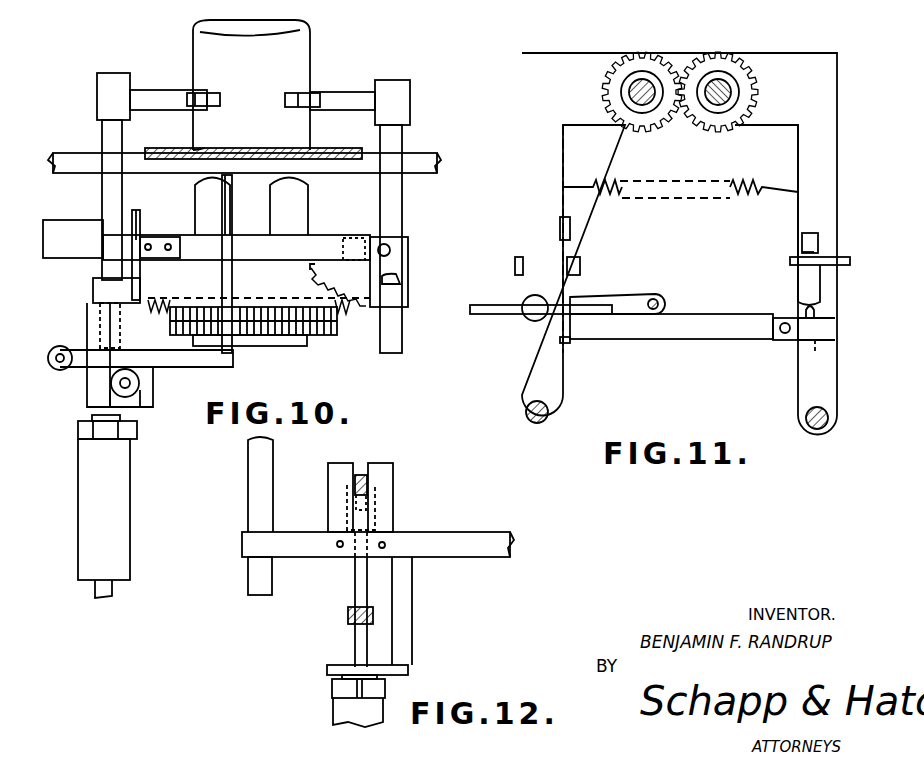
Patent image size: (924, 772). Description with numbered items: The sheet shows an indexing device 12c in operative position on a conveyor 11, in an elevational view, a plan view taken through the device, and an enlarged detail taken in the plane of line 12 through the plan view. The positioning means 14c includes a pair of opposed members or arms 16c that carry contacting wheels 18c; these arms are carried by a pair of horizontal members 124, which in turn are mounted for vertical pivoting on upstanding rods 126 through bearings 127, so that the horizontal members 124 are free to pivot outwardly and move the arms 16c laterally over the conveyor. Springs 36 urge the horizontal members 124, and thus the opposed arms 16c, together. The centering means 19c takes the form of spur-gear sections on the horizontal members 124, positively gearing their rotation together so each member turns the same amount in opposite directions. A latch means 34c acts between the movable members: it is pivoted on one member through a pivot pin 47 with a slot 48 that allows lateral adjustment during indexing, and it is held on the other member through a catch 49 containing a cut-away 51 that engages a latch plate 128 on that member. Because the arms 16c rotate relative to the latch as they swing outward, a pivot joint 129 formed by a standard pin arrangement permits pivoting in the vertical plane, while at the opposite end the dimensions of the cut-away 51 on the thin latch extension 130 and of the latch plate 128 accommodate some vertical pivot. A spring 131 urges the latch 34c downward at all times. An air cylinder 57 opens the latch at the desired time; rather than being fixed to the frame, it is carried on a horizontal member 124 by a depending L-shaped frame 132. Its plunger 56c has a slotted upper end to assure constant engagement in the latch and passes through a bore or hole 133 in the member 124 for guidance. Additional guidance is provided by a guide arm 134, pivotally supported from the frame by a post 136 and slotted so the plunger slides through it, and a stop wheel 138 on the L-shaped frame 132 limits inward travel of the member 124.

In FIG. 10, the conveyor 11 is at (330, 152).
In FIG. 11, the frame arms 12 is at (563, 220).
In FIG. 10, the indexing device 12c is at (345, 341).
In FIG. 10, the positioning means 14c is at (349, 96).
In FIG. 10, the opposed members or arms 16c is at (166, 84).
In FIG. 12, the opposed members or arms 16c is at (250, 492).
In FIG. 10, the contacting wheels 18c is at (214, 99).
In FIG. 11, the centering means 19c is at (683, 128).
In FIG. 10, the latch means 34c is at (330, 236).
In FIG. 11, the latch means 34c is at (720, 314).
In FIG. 11, the springs 36 is at (738, 186).
In FIG. 10, the pivot pin 47 is at (390, 250).
In FIG. 11, the pivot pin 47 is at (822, 348).
In FIG. 10, the slot 48 is at (396, 274).
In FIG. 10, the catch 49 is at (128, 225).
In FIG. 10, the cut-away 51 is at (145, 240).
In FIG. 12, the plunger 56c is at (357, 585).
In FIG. 10, the air cylinder 57 is at (80, 486).
In FIG. 12, the air cylinder 57 is at (335, 712).
In FIG. 10, the horizontal members 124 is at (400, 300).
In FIG. 11, the horizontal members 124 is at (566, 203).
In FIG. 12, the horizontal members 124 is at (458, 540).
In FIG. 11, the upstanding rods 126 is at (705, 76).
In FIG. 10, the bearings 127 is at (193, 208).
In FIG. 11, the bearings 127 is at (640, 72).
In FIG. 10, the latch plate 128 is at (140, 280).
In FIG. 11, the latch plate 128 is at (572, 290).
In FIG. 10, the pivot joint 129 is at (360, 238).
In FIG. 11, the pivot joint 129 is at (783, 338).
In FIG. 10, the latch extension 130 is at (140, 226).
In FIG. 12, the latch extension 130 is at (360, 473).
In FIG. 10, the spring 131 is at (310, 275).
In FIG. 10, the L-shaped frame 132 is at (88, 318).
In FIG. 12, the L-shaped frame 132 is at (412, 620).
In FIG. 11, the bore or hole 133 is at (530, 300).
In FIG. 10, the guide arm 134 is at (190, 368).
In FIG. 11, the guide arm 134 is at (625, 300).
In FIG. 12, the guide arm 134 is at (348, 618).
In FIG. 10, the post 136 is at (234, 350).
In FIG. 11, the post 136 is at (660, 302).
In FIG. 10, the stop wheel 138 is at (134, 386).